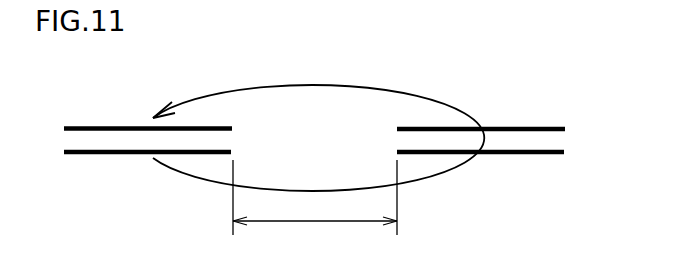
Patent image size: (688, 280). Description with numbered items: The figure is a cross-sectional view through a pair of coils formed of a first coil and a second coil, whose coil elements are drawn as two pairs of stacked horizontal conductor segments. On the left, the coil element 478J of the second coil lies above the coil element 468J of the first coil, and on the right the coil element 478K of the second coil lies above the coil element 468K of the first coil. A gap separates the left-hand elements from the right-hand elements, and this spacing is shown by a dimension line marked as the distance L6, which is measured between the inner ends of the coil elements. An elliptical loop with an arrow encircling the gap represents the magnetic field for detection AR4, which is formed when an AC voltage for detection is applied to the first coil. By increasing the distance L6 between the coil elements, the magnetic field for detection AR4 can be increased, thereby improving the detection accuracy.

The coil element 478J is at (97, 127).
The coil element 468J is at (97, 155).
The coil element 478K is at (527, 128).
The coil element 468K is at (527, 155).
The magnetic field for detection AR4 is at (432, 98).
The distance L6 is at (315, 207).